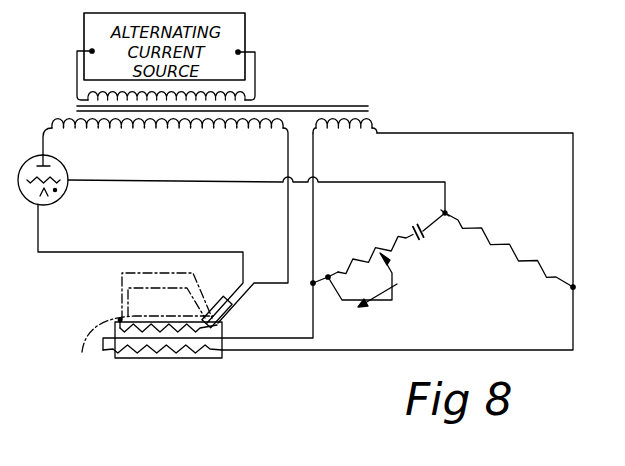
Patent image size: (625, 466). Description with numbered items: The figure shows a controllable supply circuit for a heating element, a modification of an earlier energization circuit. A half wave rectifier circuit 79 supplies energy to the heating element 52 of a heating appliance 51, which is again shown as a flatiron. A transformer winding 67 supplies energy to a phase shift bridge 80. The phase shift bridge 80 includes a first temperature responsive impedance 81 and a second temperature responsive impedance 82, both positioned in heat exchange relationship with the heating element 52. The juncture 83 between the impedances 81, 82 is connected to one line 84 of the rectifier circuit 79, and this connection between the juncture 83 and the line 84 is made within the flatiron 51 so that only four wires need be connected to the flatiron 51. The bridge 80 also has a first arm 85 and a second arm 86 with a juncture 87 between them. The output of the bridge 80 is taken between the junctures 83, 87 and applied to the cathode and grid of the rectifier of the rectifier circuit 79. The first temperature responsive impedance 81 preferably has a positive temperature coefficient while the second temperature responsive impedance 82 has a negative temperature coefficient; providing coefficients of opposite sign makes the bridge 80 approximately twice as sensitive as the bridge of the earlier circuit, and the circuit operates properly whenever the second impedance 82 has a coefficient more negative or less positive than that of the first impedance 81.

The heating appliance 51 is at (155, 331).
The heating element 52 is at (182, 318).
The transformer winding 67 is at (390, 121).
The half wave rectifier circuit 79 is at (138, 223).
The phase shift bridge 80 is at (443, 259).
The first temperature responsive impedance 81 is at (142, 350).
The second temperature responsive impedance 82 is at (204, 354).
The juncture 83 is at (158, 352).
The line 84 is at (199, 252).
The first arm 85 is at (377, 242).
The second arm 86 is at (514, 246).
The juncture 87 is at (448, 212).